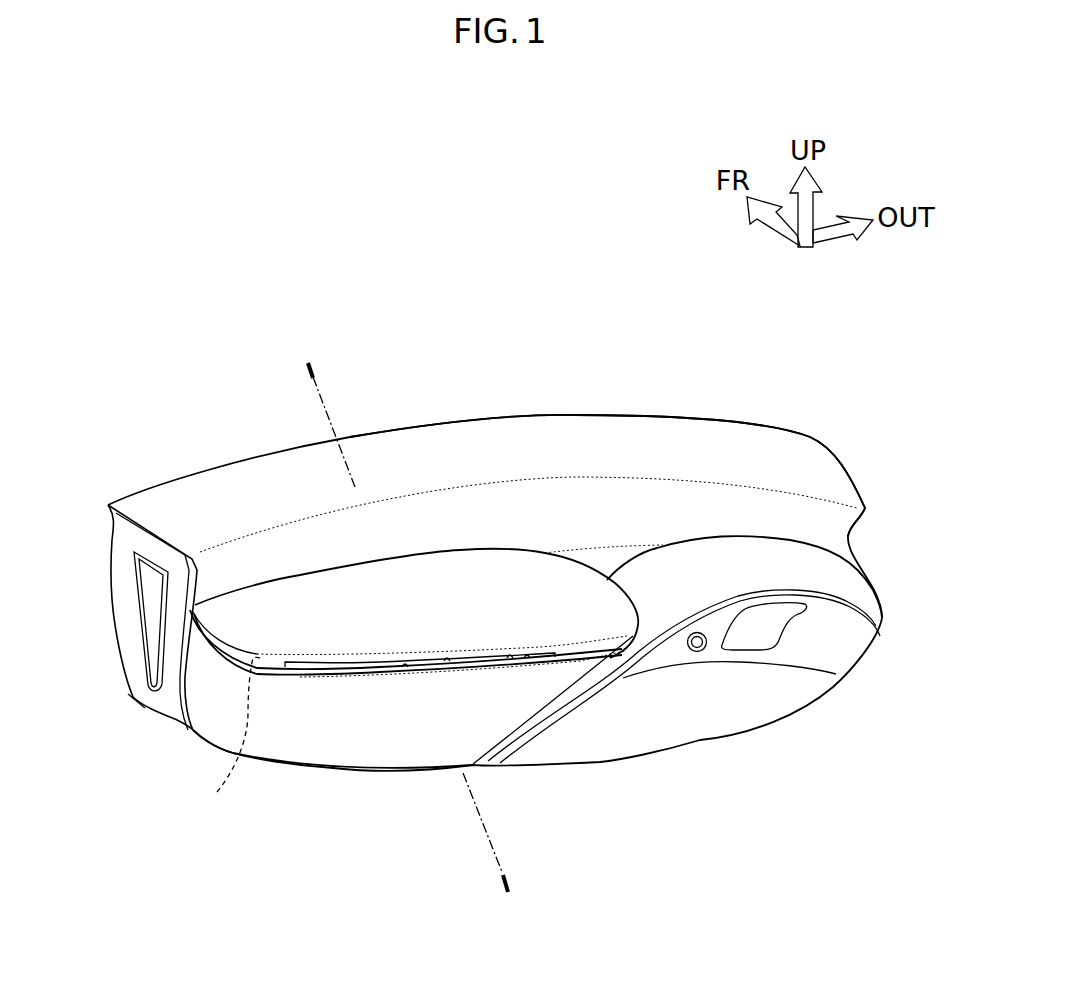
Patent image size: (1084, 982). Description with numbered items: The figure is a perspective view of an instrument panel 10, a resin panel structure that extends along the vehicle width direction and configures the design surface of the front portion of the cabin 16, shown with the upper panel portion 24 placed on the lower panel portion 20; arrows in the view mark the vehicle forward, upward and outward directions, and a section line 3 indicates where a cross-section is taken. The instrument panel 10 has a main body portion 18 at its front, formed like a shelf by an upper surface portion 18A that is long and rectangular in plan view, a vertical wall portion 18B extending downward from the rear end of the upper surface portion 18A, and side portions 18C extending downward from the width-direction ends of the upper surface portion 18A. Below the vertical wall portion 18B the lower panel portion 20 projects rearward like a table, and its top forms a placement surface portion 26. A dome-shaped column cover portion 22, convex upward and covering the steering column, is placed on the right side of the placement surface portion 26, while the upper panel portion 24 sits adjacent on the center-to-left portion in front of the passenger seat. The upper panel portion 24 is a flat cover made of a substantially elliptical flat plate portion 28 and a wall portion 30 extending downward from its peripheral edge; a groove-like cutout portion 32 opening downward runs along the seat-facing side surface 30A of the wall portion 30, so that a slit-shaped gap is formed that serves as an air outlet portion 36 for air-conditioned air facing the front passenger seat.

The section line 3 is at (295, 380).
The instrument panel 10 is at (851, 449).
The cabin 16 is at (673, 845).
The main body portion 18 is at (507, 418).
The upper surface portion 18A is at (595, 430).
The vertical wall portion 18B is at (842, 529).
The side portion 18C is at (125, 544).
The lower panel portion 20 is at (288, 738).
The column cover portion 22 is at (862, 593).
The upper panel portion 24 is at (517, 537).
The placement surface portion 26 is at (223, 736).
The flat plate portion 28 is at (413, 590).
The wall portion 30 is at (577, 652).
The side surface 30A is at (548, 660).
The cutout portion 32 is at (520, 660).
The air outlet portion 36 is at (407, 670).